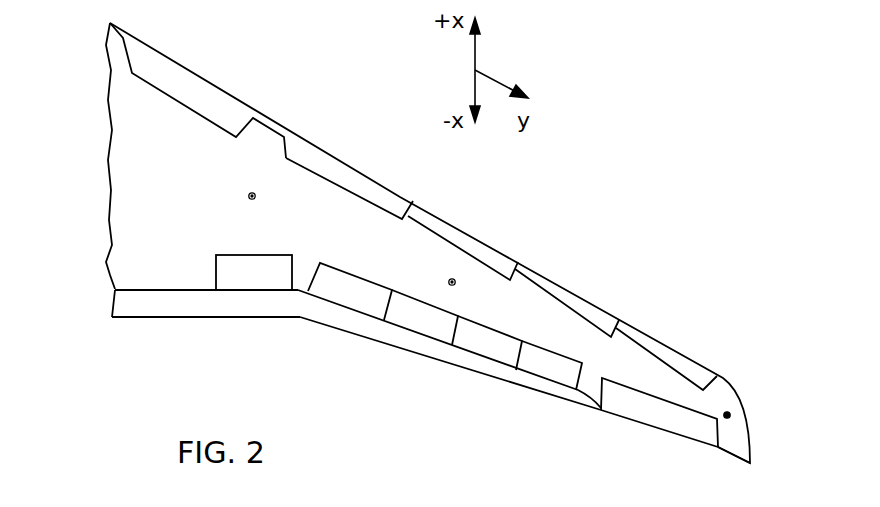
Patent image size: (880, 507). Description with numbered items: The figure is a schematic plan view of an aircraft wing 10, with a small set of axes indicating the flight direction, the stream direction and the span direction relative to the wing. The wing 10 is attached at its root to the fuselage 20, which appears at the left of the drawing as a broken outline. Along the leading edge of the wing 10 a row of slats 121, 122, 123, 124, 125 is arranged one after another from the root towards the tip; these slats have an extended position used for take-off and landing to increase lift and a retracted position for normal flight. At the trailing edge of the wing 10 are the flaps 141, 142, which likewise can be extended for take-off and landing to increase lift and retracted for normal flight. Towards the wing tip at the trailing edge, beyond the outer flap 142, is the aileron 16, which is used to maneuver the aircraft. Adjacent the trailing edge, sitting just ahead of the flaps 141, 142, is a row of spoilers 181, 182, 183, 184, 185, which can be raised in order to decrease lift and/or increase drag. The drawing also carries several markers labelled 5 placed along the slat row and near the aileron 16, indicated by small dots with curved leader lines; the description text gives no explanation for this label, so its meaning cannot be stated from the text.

The aircraft wing 10 is at (110, 117).
The fuselage 20 is at (68, 190).
The hinge axis 5 is at (255, 193).
The slat 121 is at (182, 78).
The slat 122 is at (345, 172).
The slat 123 is at (423, 215).
The slat 124 is at (560, 295).
The slat 125 is at (668, 353).
The flap 141 is at (163, 307).
The flap 142 is at (585, 403).
The aileron 16 is at (667, 420).
The spoiler 181 is at (255, 280).
The spoiler 182 is at (355, 300).
The spoiler 183 is at (420, 327).
The spoiler 184 is at (485, 348).
The spoiler 185 is at (553, 372).